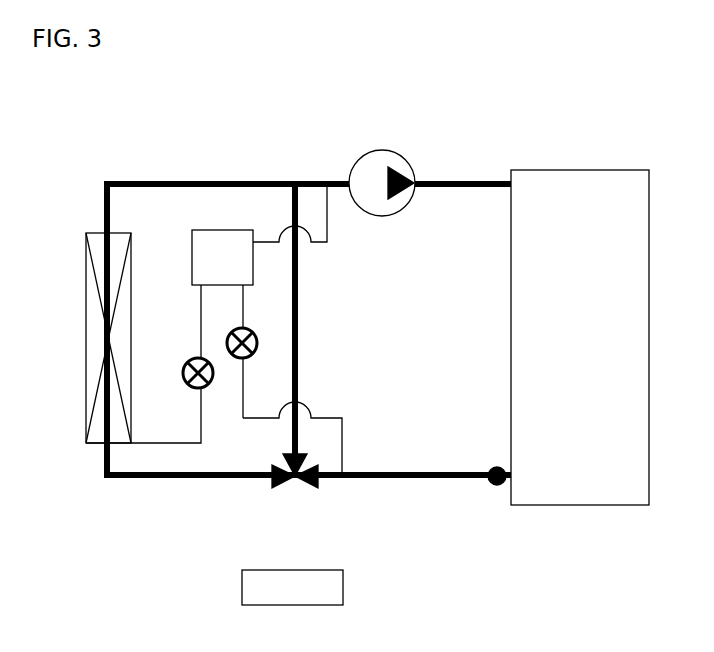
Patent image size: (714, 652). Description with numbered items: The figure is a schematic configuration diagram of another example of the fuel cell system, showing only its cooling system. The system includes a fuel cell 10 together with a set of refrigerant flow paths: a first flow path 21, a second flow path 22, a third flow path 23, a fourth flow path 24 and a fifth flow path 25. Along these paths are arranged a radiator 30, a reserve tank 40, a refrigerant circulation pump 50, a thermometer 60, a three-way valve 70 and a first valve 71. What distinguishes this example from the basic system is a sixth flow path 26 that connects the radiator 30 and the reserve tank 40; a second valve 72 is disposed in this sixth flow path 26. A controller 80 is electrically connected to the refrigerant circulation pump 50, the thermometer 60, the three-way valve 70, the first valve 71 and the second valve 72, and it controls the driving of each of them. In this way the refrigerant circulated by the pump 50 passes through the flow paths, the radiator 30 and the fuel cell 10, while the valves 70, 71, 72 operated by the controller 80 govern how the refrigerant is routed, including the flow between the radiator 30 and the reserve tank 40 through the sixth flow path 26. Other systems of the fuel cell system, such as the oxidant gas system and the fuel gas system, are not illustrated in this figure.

The fuel cell 10 is at (511, 338).
The first flow path 21 is at (197, 478).
The second flow path 22 is at (160, 182).
The third flow path 23 is at (297, 340).
The fourth flow path 24 is at (328, 417).
The fifth flow path 25 is at (328, 215).
The sixth flow path 26 is at (198, 410).
The radiator 30 is at (86, 368).
The reserve tank 40 is at (192, 258).
The refrigerant circulation pump 50 is at (397, 153).
The thermometer 60 is at (490, 483).
The three-way valve 70 is at (293, 478).
The first valve 71 is at (236, 357).
The second valve 72 is at (188, 362).
The controller 80 is at (242, 585).